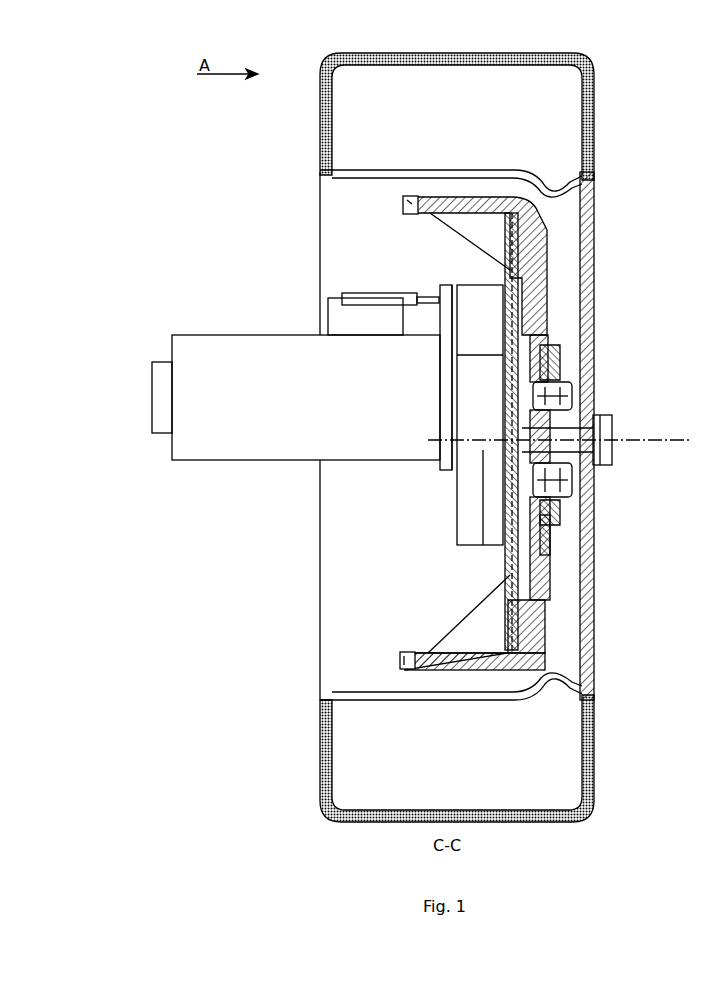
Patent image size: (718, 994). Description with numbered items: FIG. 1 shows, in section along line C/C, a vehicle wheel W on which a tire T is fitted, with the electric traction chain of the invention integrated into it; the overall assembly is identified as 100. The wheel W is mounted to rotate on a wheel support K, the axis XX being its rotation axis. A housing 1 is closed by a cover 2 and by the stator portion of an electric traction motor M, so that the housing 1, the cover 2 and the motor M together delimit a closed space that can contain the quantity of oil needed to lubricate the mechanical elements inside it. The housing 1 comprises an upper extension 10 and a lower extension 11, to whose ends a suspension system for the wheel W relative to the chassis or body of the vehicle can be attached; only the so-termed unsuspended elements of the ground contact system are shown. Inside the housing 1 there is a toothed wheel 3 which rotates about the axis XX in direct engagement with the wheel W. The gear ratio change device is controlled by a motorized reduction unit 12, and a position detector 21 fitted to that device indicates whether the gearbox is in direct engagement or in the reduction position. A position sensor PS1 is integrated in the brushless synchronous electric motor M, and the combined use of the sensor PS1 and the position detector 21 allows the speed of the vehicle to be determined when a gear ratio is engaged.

The tire T is at (493, 437).
The wheel W is at (594, 178).
The hub assembly 100 is at (455, 258).
The upper extension 10 is at (403, 204).
The lower extension 11 is at (400, 660).
The housing 1 is at (545, 660).
The cover 2 is at (503, 560).
The toothed wheel 3 is at (550, 598).
The wheel support K is at (570, 347).
The electric traction motor M is at (242, 443).
The position sensor PS1 is at (152, 378).
The motorized reduction unit 12 is at (348, 316).
The position detector 21 is at (355, 300).